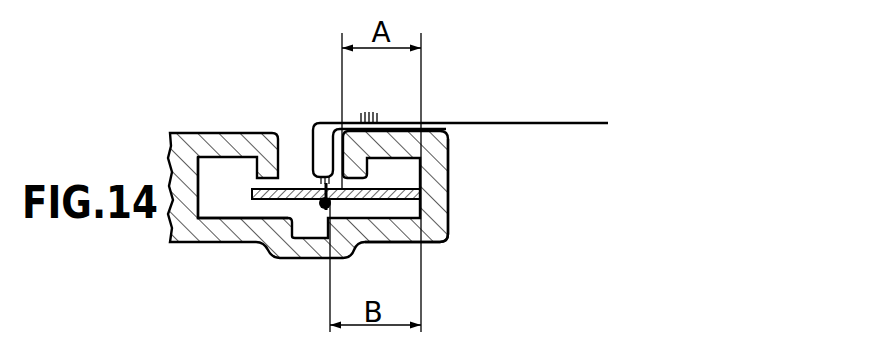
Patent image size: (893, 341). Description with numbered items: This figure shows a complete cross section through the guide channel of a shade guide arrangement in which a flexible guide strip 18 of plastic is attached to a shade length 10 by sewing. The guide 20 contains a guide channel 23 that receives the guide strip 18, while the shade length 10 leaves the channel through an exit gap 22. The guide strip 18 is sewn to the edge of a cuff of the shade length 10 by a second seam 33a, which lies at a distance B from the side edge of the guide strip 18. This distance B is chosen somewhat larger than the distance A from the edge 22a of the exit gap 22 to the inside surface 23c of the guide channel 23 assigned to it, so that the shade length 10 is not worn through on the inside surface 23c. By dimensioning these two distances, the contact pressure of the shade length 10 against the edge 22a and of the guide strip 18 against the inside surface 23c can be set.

The shade length 10 is at (557, 122).
The guide strip 18 is at (422, 236).
The guide 20 is at (215, 142).
The exit gap 22 is at (293, 152).
The edge of the exit gap 22a is at (364, 160).
The guide channel 23 is at (222, 186).
The inside surface of the guide channel 23c is at (430, 176).
The second seam 33a is at (316, 204).